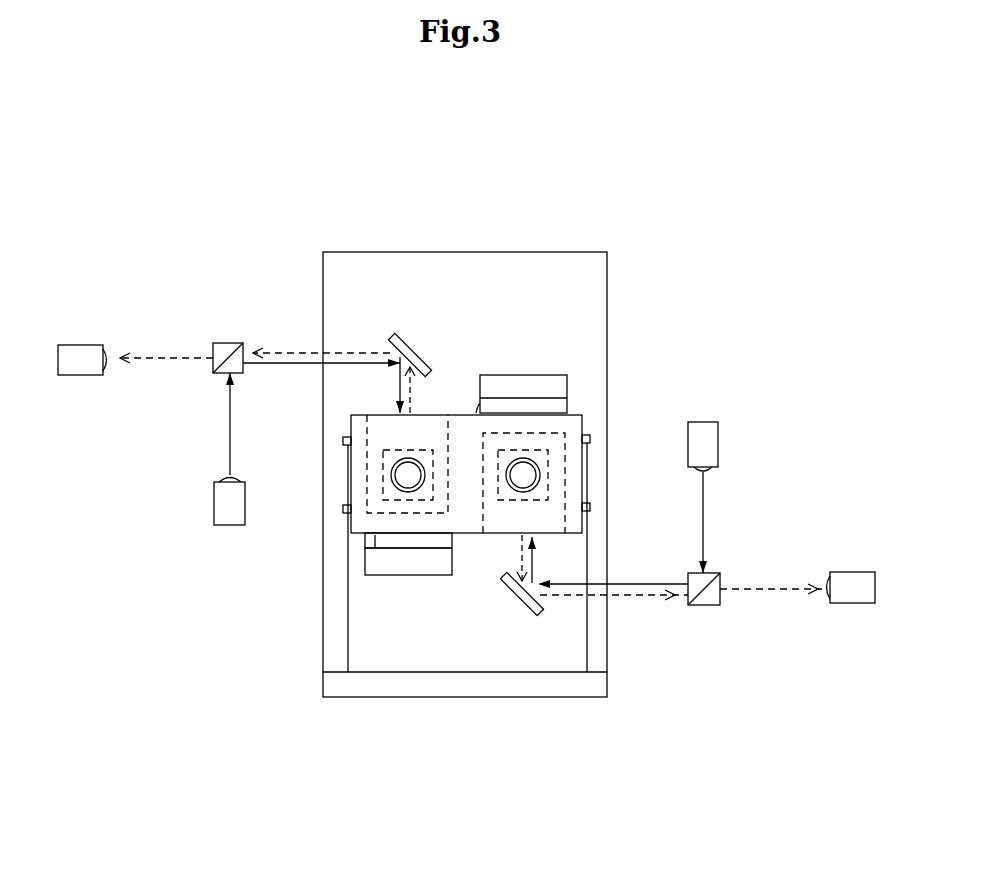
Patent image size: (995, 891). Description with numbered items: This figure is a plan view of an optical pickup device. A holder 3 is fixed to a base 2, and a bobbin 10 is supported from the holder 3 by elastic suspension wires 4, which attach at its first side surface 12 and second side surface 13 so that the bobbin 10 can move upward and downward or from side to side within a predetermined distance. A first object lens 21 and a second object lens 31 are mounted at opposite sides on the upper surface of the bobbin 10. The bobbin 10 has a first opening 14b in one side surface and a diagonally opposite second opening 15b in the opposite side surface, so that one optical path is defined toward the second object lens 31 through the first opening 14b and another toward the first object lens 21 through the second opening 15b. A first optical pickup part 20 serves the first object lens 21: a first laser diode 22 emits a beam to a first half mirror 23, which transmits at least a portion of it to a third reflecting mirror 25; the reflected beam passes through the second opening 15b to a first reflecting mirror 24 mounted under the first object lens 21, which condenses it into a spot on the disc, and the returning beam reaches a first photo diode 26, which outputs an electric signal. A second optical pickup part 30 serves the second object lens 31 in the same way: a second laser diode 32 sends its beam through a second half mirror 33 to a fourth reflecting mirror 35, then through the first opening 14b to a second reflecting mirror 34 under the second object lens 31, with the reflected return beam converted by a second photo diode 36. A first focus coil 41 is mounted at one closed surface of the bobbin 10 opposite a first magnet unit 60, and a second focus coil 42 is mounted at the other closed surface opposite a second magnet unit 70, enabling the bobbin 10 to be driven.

The base 2 is at (594, 305).
The holder 3 is at (493, 685).
The suspension wires 4 is at (347, 603).
The bobbin 10 is at (476, 463).
The first side surface 12 is at (586, 468).
The second side surface 13 is at (349, 518).
The first opening 14b is at (369, 406).
The second opening 15b is at (556, 525).
The first optical pickup part 20 is at (706, 565).
The first object lens 21 is at (535, 468).
The first laser diode 22 is at (720, 440).
The first half mirror 23 is at (712, 600).
The first reflecting mirror 24 is at (548, 497).
The third reflecting mirror 25 is at (533, 612).
The first photo diode 26 is at (848, 577).
The second optical pickup part 30 is at (229, 375).
The second object lens 31 is at (392, 477).
The second laser diode 32 is at (218, 510).
The second half mirror 33 is at (218, 343).
The second reflecting mirror 34 is at (383, 452).
The fourth reflecting mirror 35 is at (409, 340).
The second photo diode 36 is at (78, 355).
The first focus coil 41 is at (513, 413).
The second focus coil 42 is at (365, 547).
The first magnet unit 60 is at (521, 350).
The second magnet unit 70 is at (411, 585).